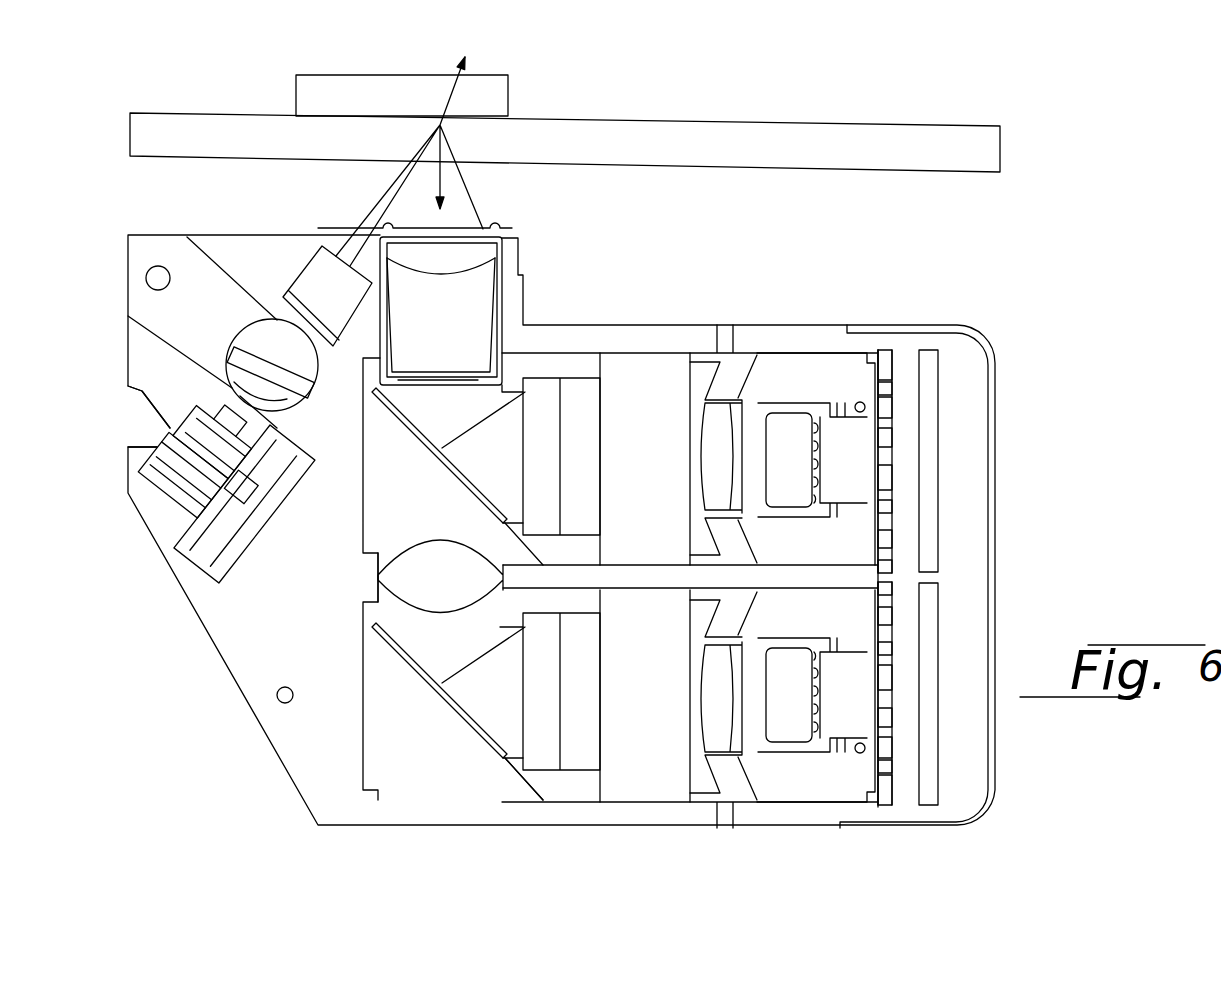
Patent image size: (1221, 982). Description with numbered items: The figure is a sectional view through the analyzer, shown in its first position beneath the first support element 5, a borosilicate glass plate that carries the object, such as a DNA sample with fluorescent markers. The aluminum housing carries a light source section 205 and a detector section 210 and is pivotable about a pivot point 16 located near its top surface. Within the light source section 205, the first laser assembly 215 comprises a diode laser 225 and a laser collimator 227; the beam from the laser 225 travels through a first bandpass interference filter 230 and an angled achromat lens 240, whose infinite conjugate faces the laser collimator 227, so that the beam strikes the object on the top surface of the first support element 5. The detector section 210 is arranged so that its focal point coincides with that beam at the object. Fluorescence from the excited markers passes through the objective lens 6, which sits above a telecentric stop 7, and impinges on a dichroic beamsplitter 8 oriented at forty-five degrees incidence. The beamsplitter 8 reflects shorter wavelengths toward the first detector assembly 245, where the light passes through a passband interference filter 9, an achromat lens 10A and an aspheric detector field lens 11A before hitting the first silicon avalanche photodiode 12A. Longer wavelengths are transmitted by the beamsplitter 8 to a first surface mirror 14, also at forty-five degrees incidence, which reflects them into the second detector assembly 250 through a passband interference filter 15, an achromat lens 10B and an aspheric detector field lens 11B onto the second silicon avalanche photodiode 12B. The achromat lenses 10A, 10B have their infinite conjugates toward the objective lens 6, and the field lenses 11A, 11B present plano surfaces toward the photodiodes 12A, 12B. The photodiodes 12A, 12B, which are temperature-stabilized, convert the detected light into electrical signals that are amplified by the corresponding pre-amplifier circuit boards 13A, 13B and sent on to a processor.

The first support element 5 is at (215, 125).
The pivot point 16 is at (155, 265).
The achromat lens 240 is at (323, 273).
The objective lens 6 is at (441, 260).
The telecentric stop 7 is at (403, 373).
The first bandpass interference filter 230 is at (250, 360).
The first laser assembly 215 is at (108, 410).
The laser collimator 227 is at (203, 438).
The laser 225 is at (183, 475).
The light source section 205 is at (286, 524).
The detector section 210 is at (348, 648).
The dichroic beamsplitter 8 is at (417, 447).
The passband interference filter 9 is at (535, 450).
The first detector assembly 245 is at (642, 373).
The achromat lens 10A is at (718, 453).
The aspheric detector field lens 11A is at (813, 460).
The silicon avalanche photodiode 12A is at (851, 487).
The pre-amplifier circuit board 13A is at (939, 445).
The first surface mirror 14 is at (442, 700).
The passband interference filter 15 is at (535, 690).
The second detector assembly 250 is at (655, 782).
The achromat lens 10B is at (715, 692).
The aspheric detector field lens 11B is at (812, 697).
The silicon avalanche photodiode 12B is at (852, 723).
The pre-amplifier circuit board 13B is at (938, 630).